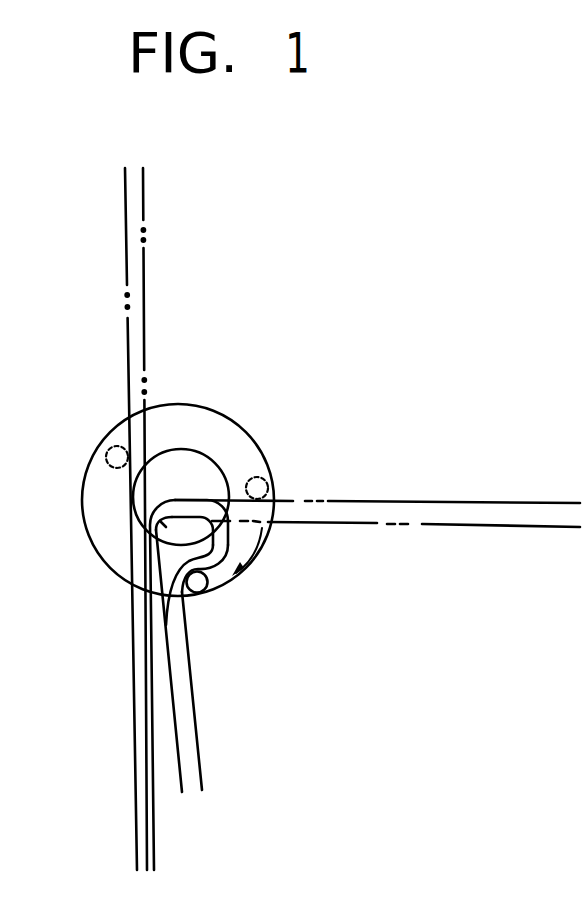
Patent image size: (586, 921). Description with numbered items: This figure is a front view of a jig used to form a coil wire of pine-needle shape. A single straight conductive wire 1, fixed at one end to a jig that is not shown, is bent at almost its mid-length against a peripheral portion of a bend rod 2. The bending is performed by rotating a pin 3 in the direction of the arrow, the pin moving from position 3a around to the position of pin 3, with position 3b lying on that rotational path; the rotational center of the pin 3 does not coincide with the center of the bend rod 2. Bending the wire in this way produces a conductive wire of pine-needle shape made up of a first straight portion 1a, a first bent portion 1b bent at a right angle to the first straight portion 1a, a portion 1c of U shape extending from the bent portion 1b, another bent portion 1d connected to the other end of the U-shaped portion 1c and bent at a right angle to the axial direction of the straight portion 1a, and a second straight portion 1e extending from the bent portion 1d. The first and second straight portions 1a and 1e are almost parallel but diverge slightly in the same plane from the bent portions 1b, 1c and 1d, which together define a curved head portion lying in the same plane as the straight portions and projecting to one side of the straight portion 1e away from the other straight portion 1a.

The conductive wire 1 is at (142, 807).
The first straight portion 1a is at (140, 701).
The first bent portion 1b is at (146, 543).
The U-shaped portion 1c is at (231, 541).
The another bent portion 1d is at (183, 603).
The second straight portion 1e is at (192, 750).
The bend rod 2 is at (185, 522).
The pin 3 is at (206, 589).
The position of pin 3a is at (112, 447).
The position of pin 3b is at (268, 487).